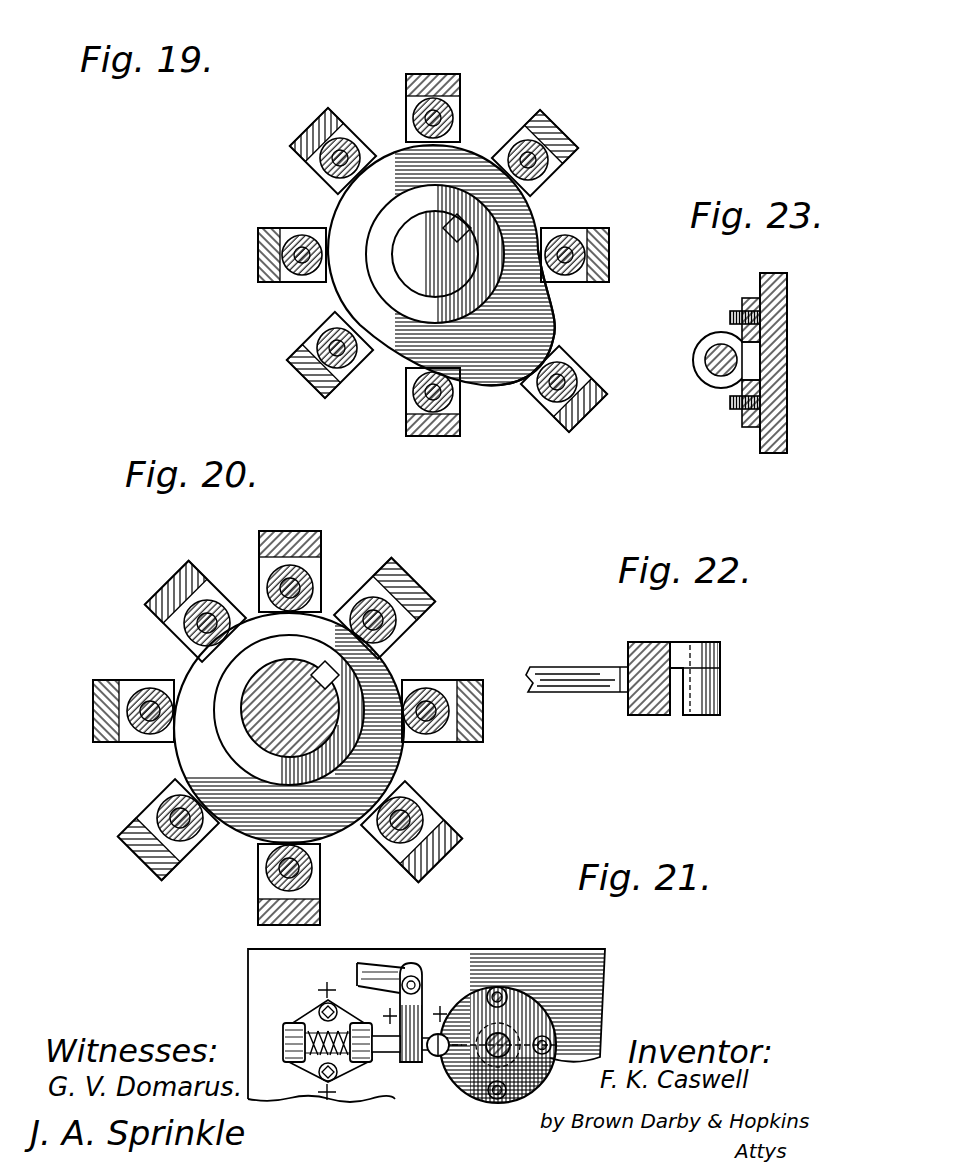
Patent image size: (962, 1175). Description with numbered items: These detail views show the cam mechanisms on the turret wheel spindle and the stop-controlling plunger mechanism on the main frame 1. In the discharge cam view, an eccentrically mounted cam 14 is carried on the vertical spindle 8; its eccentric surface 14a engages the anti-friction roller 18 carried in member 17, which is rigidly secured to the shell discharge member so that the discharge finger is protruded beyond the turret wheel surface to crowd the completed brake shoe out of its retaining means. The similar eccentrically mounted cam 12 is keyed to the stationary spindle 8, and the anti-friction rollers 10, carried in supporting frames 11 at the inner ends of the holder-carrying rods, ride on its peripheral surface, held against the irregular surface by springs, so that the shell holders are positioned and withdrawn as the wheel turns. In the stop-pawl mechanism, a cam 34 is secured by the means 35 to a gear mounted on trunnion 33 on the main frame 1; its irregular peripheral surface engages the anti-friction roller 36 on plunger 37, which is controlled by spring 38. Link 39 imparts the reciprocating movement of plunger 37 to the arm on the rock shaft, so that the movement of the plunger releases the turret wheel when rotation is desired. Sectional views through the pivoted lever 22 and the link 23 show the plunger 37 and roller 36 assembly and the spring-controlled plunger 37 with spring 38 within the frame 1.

In FIG. 23, the main frame 1 is at (780, 343).
In FIG. 21, the main frame 1 is at (592, 977).
In FIG. 19, the vertical spindle 8 is at (410, 243).
In FIG. 20, the vertical spindle 8 is at (280, 673).
In FIG. 20, the anti-friction rollers 10 is at (134, 697).
In FIG. 20, the supporting frames 11 is at (110, 700).
In FIG. 20, the eccentrically mounted cam 12 is at (289, 728).
In FIG. 19, the eccentrically mounted cam 14 is at (463, 158).
In FIG. 19, the eccentric surface 14a is at (530, 340).
In FIG. 19, the member 17 is at (412, 74).
In FIG. 19, the anti-friction roller 18 is at (420, 118).
In FIG. 21, the pivoted lever 22 is at (414, 1002).
In FIG. 21, the link 23 is at (324, 1050).
In FIG. 21, the trunnion 33 is at (503, 1050).
In FIG. 21, the cam 34 is at (515, 995).
In FIG. 21, the securing means 35 is at (542, 1035).
In FIG. 22, the anti-friction roller 36 is at (710, 682).
In FIG. 21, the anti-friction roller 36 is at (438, 1057).
In FIG. 23, the plunger 37 is at (723, 365).
In FIG. 22, the plunger 37 is at (630, 652).
In FIG. 21, the plunger 37 is at (382, 1056).
In FIG. 23, the spring 38 is at (715, 350).
In FIG. 21, the spring 38 is at (307, 1028).
In FIG. 21, the link 39 is at (383, 977).